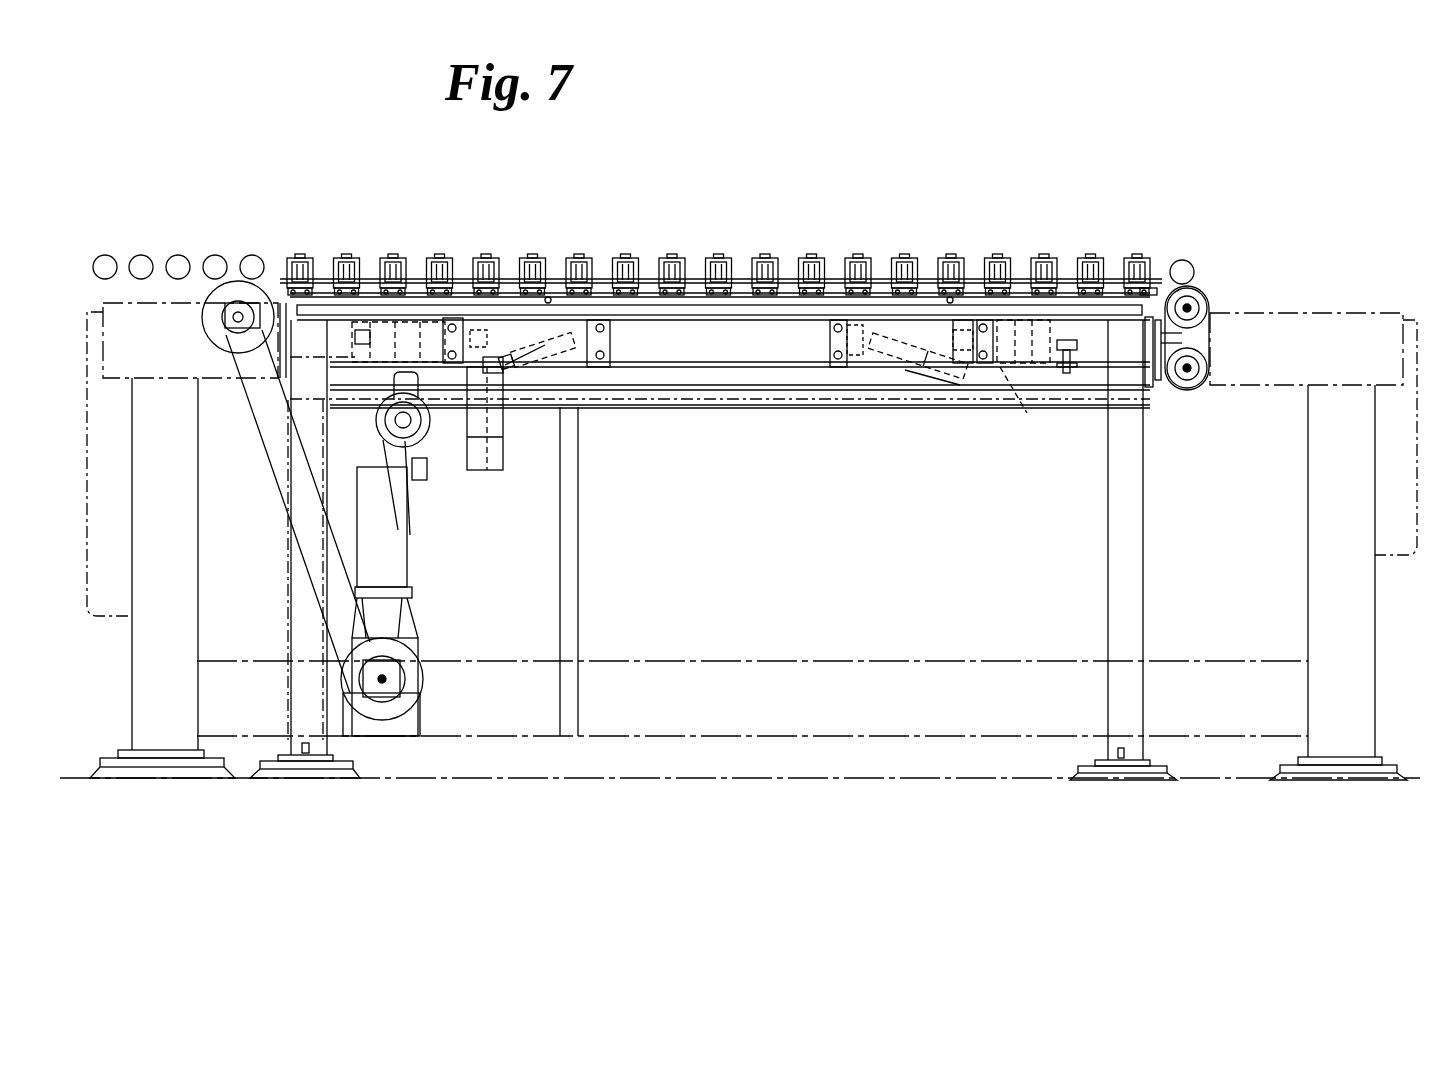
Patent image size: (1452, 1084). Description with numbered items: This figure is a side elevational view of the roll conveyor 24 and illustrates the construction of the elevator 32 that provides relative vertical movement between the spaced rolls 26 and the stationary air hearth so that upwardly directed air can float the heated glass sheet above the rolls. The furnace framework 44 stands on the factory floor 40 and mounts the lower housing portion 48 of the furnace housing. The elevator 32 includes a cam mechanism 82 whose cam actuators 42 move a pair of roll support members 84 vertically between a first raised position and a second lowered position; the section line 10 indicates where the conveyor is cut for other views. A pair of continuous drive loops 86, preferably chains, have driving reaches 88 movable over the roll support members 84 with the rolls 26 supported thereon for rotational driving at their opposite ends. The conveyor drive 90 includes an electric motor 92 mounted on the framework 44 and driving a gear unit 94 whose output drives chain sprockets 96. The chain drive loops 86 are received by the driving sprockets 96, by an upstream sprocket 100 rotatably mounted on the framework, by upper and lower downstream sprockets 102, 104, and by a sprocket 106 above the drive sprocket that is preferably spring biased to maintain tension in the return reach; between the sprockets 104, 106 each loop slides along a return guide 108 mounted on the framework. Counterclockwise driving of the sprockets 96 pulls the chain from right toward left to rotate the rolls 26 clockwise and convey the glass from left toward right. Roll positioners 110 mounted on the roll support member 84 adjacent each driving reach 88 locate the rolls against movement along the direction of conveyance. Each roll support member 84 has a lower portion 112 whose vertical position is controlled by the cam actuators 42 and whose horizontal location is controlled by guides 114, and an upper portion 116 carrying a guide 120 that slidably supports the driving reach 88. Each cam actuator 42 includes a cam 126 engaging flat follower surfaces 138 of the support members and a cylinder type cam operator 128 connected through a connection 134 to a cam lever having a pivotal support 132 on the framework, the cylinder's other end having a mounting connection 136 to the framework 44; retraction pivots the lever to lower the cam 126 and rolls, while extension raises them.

The section line 10 is at (697, 185).
The roll conveyor 24 is at (292, 254).
The rolls 26 is at (338, 290).
The elevator 32 is at (580, 365).
The factory floor 40 is at (665, 775).
The cam actuators 42 is at (798, 448).
The framework 44 is at (131, 627).
The lower housing portion 48 is at (848, 712).
The cam mechanism 82 is at (853, 407).
The roll support members 84 is at (750, 347).
The continuous drive loops 86 is at (250, 455).
The driving reaches 88 is at (472, 275).
The drive 90 is at (420, 579).
The electric motor 92 is at (422, 537).
The gear unit 94 is at (420, 660).
The chain sprockets 96 is at (415, 655).
The upstream sprocket 100 is at (205, 300).
The upper downstream sprocket 102 is at (1200, 300).
The lower downstream sprocket 104 is at (1197, 350).
The sprocket 106 is at (424, 472).
The return guide 108 is at (845, 409).
The roll positioners 110 is at (366, 280).
The lower portion 112 is at (458, 290).
The guides 114 is at (367, 370).
The upper portion 116 is at (418, 280).
The guide 120 is at (490, 300).
The cam 126 is at (498, 390).
The cam operator 128 is at (540, 372).
The pivotal support 132 is at (455, 367).
The connection 134 is at (492, 445).
The mounting connection 136 is at (614, 345).
The flat follower surfaces 138 is at (548, 300).